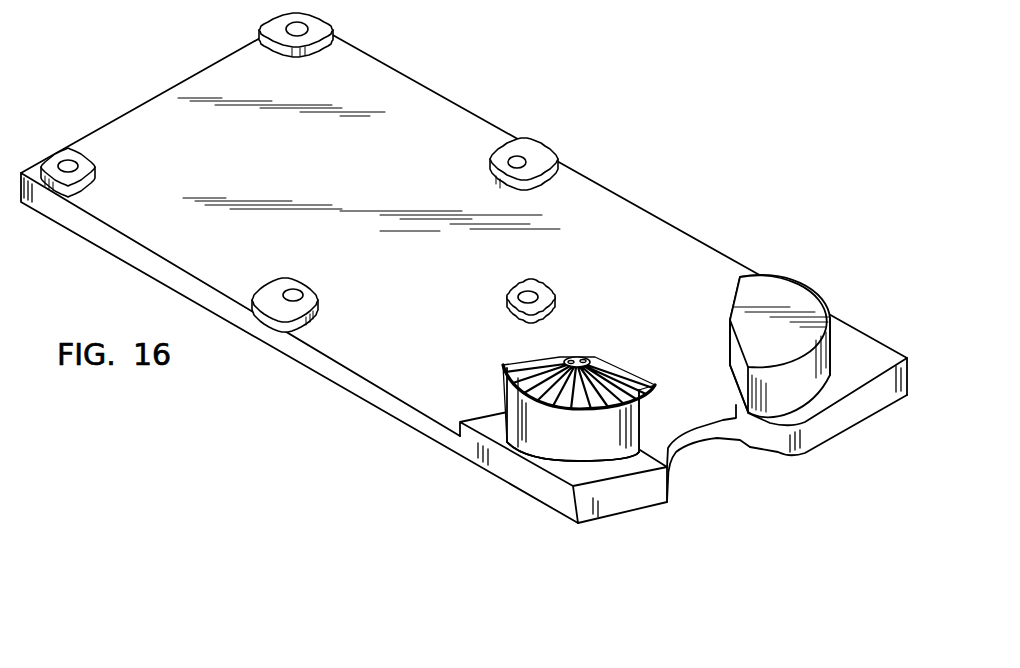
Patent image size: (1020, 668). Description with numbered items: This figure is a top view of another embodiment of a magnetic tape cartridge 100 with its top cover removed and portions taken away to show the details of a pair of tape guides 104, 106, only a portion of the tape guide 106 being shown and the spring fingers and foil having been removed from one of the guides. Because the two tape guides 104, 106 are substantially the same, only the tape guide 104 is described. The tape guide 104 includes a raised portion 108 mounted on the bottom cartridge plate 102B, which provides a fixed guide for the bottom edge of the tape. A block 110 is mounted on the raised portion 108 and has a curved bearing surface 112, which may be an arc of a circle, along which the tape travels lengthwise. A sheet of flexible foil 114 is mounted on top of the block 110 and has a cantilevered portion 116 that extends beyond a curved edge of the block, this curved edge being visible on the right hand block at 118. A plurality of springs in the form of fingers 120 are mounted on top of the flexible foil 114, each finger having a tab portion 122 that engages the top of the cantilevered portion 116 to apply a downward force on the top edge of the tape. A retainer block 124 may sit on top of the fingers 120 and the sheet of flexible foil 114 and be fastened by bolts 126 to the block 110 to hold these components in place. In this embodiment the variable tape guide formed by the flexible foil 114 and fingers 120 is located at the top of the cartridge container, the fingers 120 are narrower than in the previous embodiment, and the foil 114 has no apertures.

The magnetic tape cartridge 100 is at (617, 155).
The bottom cartridge plate 102B is at (409, 116).
The tape guide 104 is at (550, 421).
The tape guide 106 is at (776, 271).
The raised portion 108 is at (630, 465).
The block 110 is at (834, 352).
The curved bearing surface 112 is at (577, 443).
The sheet of flexible foil 114 is at (533, 367).
The cantilevered portion 116 is at (503, 393).
The curved edge 118 is at (812, 292).
The fingers 120 is at (628, 390).
The tab portion 122 is at (647, 395).
The retainer block 124 is at (580, 353).
The bolts 126 is at (572, 357).